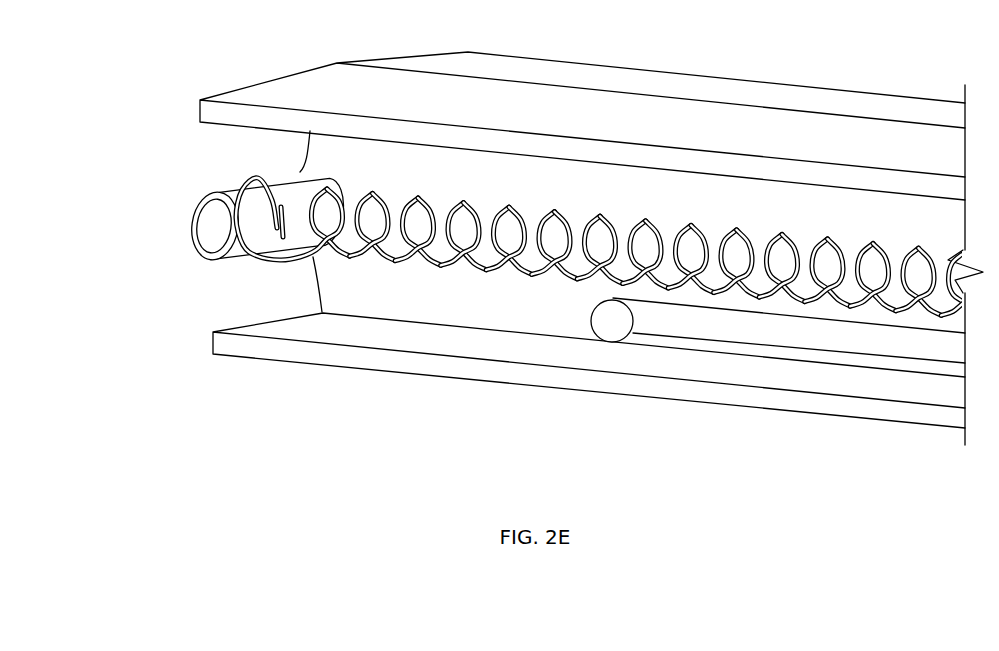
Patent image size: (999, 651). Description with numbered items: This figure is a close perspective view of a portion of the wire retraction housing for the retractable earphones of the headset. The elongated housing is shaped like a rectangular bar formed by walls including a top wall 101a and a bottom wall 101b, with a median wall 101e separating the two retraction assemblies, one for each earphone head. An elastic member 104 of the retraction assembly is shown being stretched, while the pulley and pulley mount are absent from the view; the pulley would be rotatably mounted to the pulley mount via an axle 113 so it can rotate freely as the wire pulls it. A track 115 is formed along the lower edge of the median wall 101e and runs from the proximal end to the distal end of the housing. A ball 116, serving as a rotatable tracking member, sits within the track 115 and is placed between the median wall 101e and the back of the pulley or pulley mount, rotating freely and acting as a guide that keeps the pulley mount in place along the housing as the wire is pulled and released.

The top wall 101a is at (235, 118).
The bottom wall 101b is at (493, 370).
The median wall 101e is at (363, 293).
The elastic member 104 is at (563, 276).
The axle 113 is at (210, 225).
The track 115 is at (767, 330).
The ball 116 is at (610, 322).